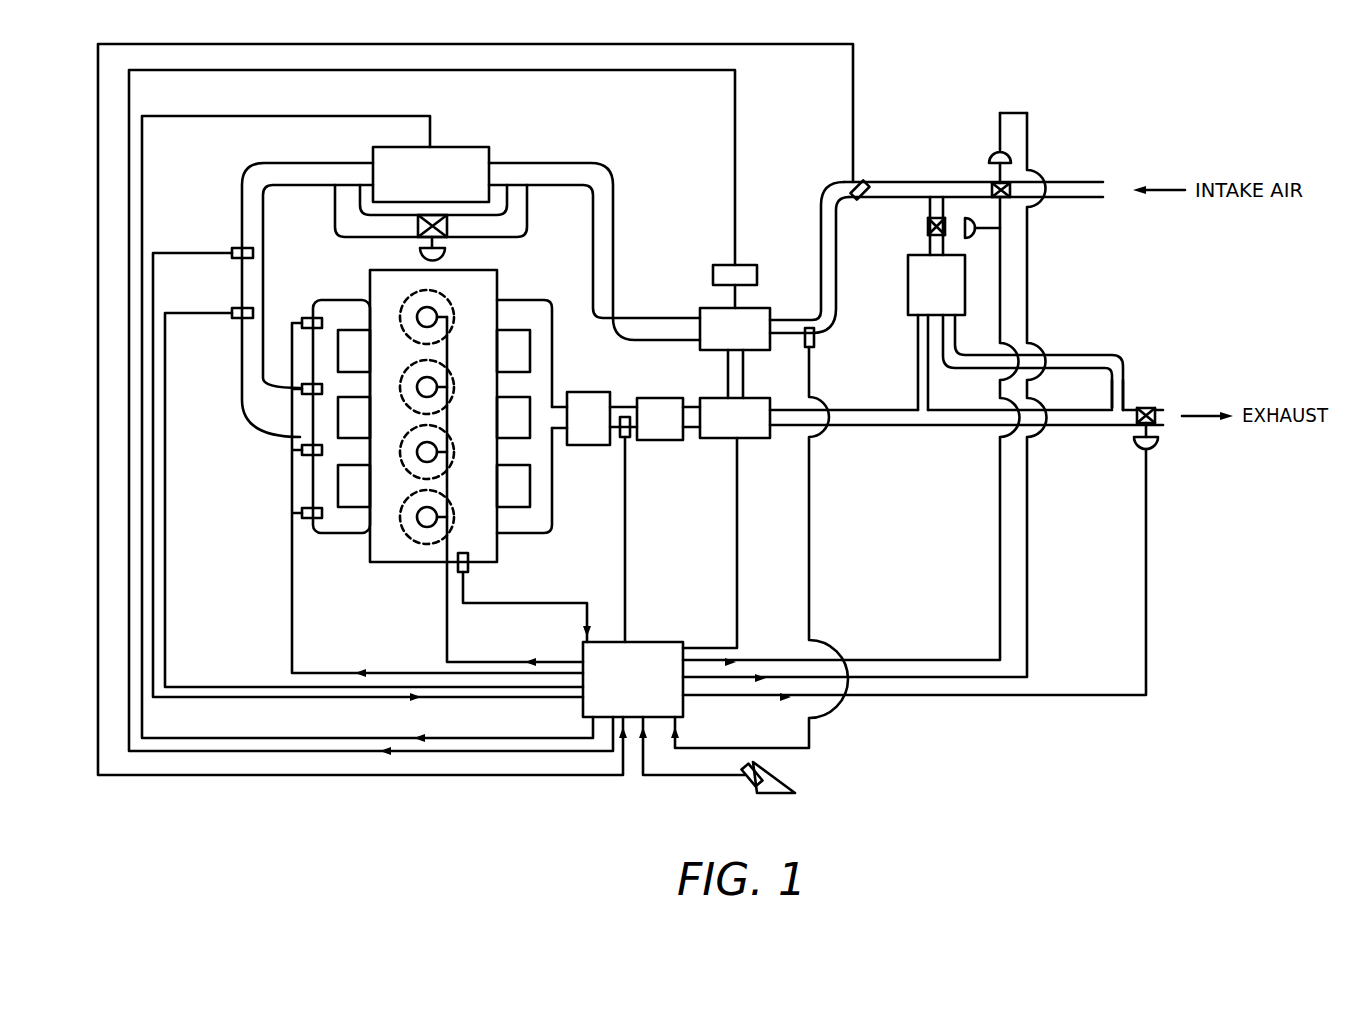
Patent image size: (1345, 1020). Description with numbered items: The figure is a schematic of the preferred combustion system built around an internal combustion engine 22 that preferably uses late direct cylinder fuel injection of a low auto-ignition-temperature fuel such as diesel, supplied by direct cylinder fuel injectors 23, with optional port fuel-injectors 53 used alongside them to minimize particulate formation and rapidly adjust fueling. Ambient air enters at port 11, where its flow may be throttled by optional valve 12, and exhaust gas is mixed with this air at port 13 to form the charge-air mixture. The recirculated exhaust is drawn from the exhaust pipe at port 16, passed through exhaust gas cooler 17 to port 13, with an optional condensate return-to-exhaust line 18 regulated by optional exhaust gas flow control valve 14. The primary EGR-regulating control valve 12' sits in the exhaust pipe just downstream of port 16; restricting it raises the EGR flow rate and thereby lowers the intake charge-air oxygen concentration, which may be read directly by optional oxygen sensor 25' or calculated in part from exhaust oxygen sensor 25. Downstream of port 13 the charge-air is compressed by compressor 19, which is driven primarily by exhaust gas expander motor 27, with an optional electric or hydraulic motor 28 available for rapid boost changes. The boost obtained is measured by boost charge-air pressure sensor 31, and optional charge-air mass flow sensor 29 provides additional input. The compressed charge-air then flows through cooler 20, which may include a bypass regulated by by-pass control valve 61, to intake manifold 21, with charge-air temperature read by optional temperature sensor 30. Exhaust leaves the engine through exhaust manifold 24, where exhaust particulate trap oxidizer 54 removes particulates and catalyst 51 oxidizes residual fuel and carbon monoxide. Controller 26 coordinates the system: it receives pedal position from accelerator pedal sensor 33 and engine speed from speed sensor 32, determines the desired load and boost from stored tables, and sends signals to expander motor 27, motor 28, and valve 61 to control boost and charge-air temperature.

The port 11 is at (1102, 190).
The valve 12 is at (980, 118).
The EGR-regulating control valve 12' is at (972, 551).
The port 13 is at (935, 200).
The exhaust gas flow control valve 14 is at (975, 235).
The port 16 is at (1123, 412).
The exhaust gas cooler 17 is at (915, 283).
The condensate return-to-exhaust line 18 is at (918, 385).
The compressor 19 is at (700, 318).
The cooler 20 is at (470, 147).
The intake manifold 21 is at (332, 302).
The internal combustion engine 22 is at (428, 562).
The direct cylinder fuel injectors 23 is at (432, 385).
The exhaust manifold 24 is at (541, 325).
The exhaust oxygen sensor 25 is at (649, 450).
The oxygen sensor 25' is at (832, 169).
The controller 26 is at (660, 652).
The exhaust gas expander motor 27 is at (752, 420).
The motor 28 is at (727, 270).
The charge-air mass flow sensor 29 is at (815, 338).
The temperature sensor 30 is at (236, 318).
The boost charge-air pressure sensor 31 is at (242, 248).
The speed sensor 32 is at (463, 573).
The accelerator pedal sensor 33 is at (745, 780).
The catalyst 51 is at (665, 410).
The port fuel-injectors 53 is at (304, 318).
The exhaust particulate trap oxidizer 54 is at (597, 405).
The by-pass control valve 61 is at (420, 256).